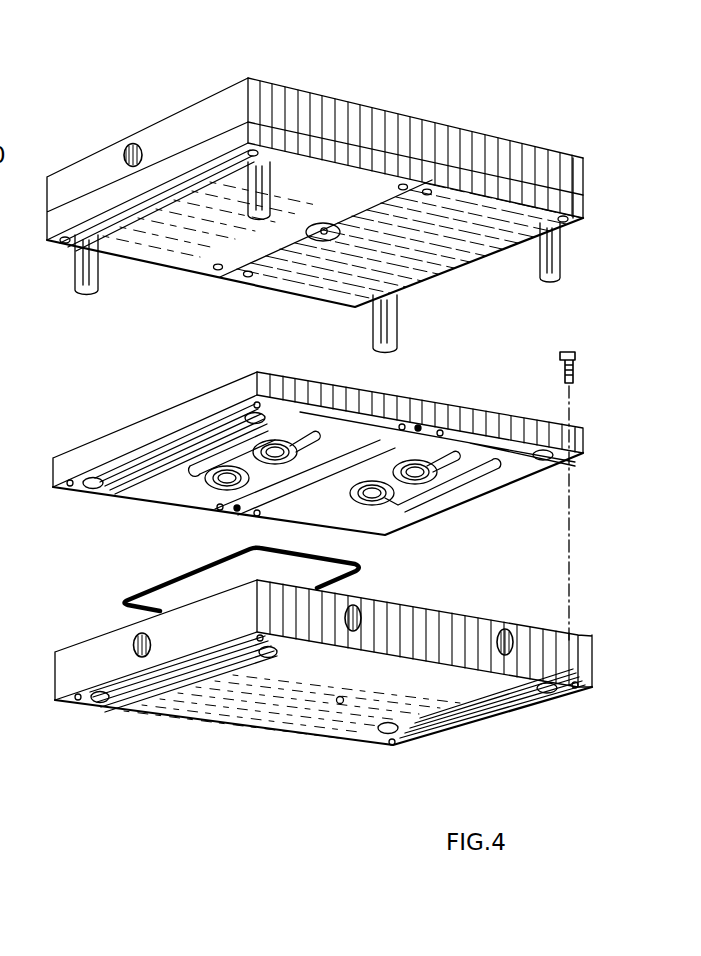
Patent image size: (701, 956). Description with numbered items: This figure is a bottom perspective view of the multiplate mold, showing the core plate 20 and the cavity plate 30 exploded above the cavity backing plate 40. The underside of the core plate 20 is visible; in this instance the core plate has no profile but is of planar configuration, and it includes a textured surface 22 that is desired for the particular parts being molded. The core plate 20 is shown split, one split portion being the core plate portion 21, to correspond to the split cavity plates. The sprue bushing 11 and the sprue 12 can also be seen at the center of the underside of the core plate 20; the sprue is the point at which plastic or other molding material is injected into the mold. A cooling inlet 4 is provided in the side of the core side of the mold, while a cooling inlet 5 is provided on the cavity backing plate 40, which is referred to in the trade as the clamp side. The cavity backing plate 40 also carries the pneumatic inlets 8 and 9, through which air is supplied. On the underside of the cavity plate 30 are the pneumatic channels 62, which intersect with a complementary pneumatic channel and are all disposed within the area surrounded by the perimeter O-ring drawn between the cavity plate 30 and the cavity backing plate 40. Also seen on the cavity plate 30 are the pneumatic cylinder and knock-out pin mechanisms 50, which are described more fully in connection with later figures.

The cooling inlet 4 is at (130, 147).
The cooling inlet 5 is at (135, 647).
The pneumatic inlet 8 is at (350, 632).
The pneumatic inlet 9 is at (512, 656).
The sprue bushing 11 is at (307, 240).
The sprue 12 is at (323, 236).
The core plate 20 is at (360, 199).
The core plate split portion 21 is at (353, 150).
The textured surface 22 is at (493, 247).
The cavity plate 30 is at (364, 462).
The cavity backing plate 40 is at (356, 675).
The pneumatic cylinder and knock-out pin mechanism 50 is at (210, 488).
The pneumatic channels 62 is at (222, 448).